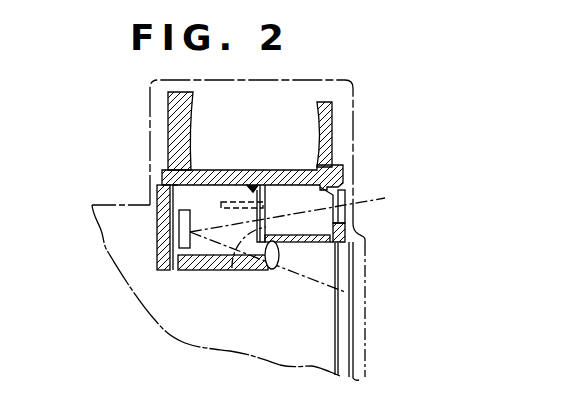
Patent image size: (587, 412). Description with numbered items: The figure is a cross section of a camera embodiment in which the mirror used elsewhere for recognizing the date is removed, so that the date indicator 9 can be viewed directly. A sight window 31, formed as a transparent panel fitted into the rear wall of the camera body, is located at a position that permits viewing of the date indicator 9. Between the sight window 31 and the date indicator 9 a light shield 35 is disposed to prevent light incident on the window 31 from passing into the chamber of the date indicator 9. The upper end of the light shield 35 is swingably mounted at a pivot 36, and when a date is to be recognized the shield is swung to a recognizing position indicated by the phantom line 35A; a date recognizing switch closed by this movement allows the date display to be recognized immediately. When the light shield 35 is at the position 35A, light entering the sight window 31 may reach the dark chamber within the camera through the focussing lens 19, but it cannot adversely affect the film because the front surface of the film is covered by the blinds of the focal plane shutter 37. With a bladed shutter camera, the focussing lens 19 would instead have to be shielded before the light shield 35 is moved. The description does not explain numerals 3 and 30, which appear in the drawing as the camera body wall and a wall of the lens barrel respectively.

The camera body wall 3 is at (353, 306).
The date indicator 9 is at (188, 204).
The focussing lens 19 is at (279, 258).
The barrel end wall 30 is at (346, 193).
The sight window 31 is at (355, 227).
The light shield 35 is at (222, 270).
The recognizing position 35A is at (226, 202).
The pivot 36 is at (255, 190).
The focal plane shutter 37 is at (335, 332).